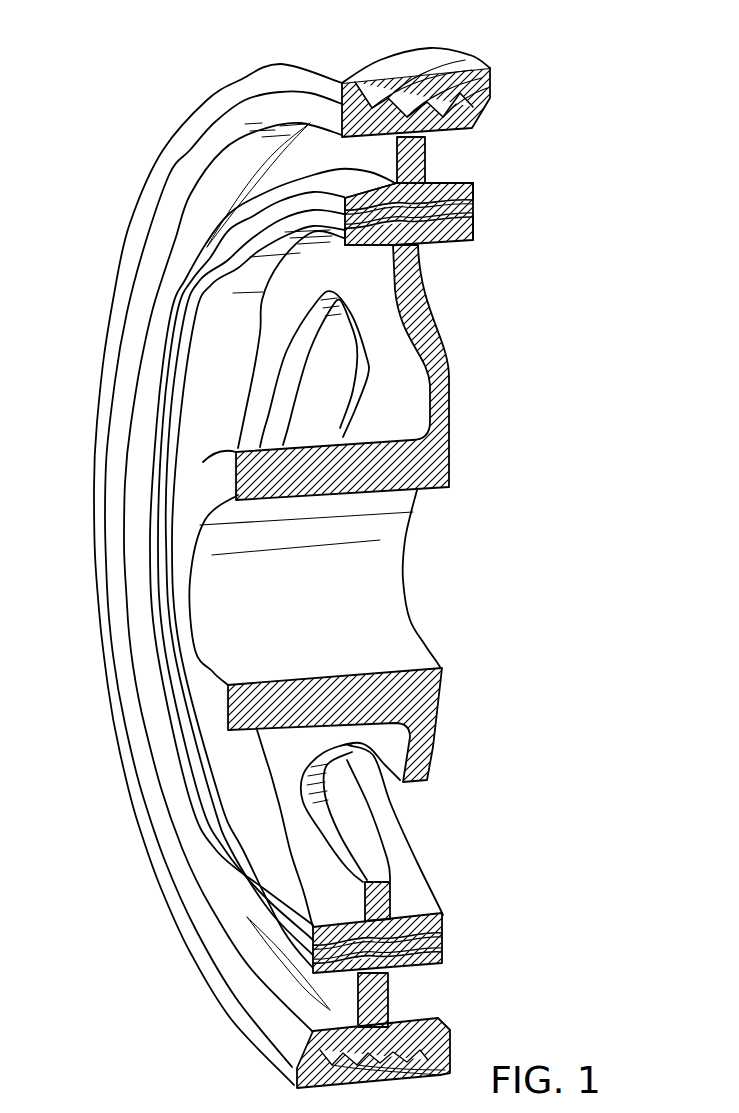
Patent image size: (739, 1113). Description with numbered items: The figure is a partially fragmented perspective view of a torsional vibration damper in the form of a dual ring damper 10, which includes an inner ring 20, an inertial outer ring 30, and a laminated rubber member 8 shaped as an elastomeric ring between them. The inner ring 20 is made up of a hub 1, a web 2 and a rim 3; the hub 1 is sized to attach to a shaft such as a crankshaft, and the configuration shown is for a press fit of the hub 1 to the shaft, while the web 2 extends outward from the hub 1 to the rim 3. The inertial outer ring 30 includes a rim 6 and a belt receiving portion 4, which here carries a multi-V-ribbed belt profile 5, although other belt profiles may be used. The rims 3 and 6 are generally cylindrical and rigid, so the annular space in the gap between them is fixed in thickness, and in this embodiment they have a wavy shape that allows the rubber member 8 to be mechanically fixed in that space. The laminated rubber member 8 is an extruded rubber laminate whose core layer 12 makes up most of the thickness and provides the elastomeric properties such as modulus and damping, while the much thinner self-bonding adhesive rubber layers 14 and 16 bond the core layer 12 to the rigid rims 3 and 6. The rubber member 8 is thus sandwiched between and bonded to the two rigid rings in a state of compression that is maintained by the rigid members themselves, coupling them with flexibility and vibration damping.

The hub 1 is at (380, 493).
The web 2 is at (450, 382).
The rim 3 is at (425, 559).
The belt receiving portion 4 is at (488, 94).
The multi-V-ribbed belt profile 5 is at (435, 68).
The rim 6 is at (455, 185).
The laminated rubber member 8 is at (228, 240).
The dual ring damper 10 is at (517, 102).
The core layer 12 is at (470, 210).
The self-bonding adhesive rubber layer 14 is at (472, 195).
The self-bonding adhesive rubber layer 16 is at (472, 228).
The inner ring 20 is at (428, 586).
The inertial outer ring 30 is at (155, 112).